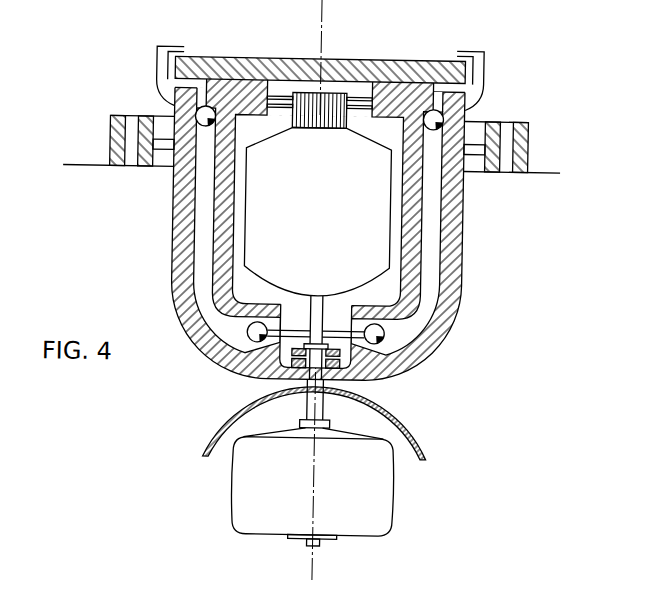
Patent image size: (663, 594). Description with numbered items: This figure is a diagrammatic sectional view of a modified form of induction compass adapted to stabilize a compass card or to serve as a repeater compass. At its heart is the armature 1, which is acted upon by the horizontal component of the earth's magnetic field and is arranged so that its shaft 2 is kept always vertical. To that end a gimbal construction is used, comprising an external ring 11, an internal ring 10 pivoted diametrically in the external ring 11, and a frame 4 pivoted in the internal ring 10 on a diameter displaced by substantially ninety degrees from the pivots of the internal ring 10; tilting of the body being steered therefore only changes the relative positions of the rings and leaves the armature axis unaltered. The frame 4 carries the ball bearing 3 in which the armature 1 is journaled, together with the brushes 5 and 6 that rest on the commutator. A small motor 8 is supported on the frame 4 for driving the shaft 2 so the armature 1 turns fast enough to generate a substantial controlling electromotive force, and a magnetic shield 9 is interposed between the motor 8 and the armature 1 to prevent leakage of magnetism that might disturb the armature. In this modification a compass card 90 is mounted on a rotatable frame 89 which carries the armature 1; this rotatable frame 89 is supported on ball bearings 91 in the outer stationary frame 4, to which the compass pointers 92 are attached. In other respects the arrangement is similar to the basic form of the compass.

The armature 1 is at (366, 229).
The shaft 2 is at (316, 318).
The ball bearing 3 is at (350, 357).
The frame 4 is at (457, 291).
The brush 5 is at (278, 98).
The brush 6 is at (353, 98).
The motor 8 is at (289, 484).
The magnetic shield 9 is at (432, 450).
The internal ring 10 is at (498, 117).
The external ring 11 is at (533, 138).
The rotatable frame 89 is at (231, 289).
The compass card 90 is at (207, 64).
The ball bearings 91 is at (201, 122).
The compass pointers 92 is at (162, 55).